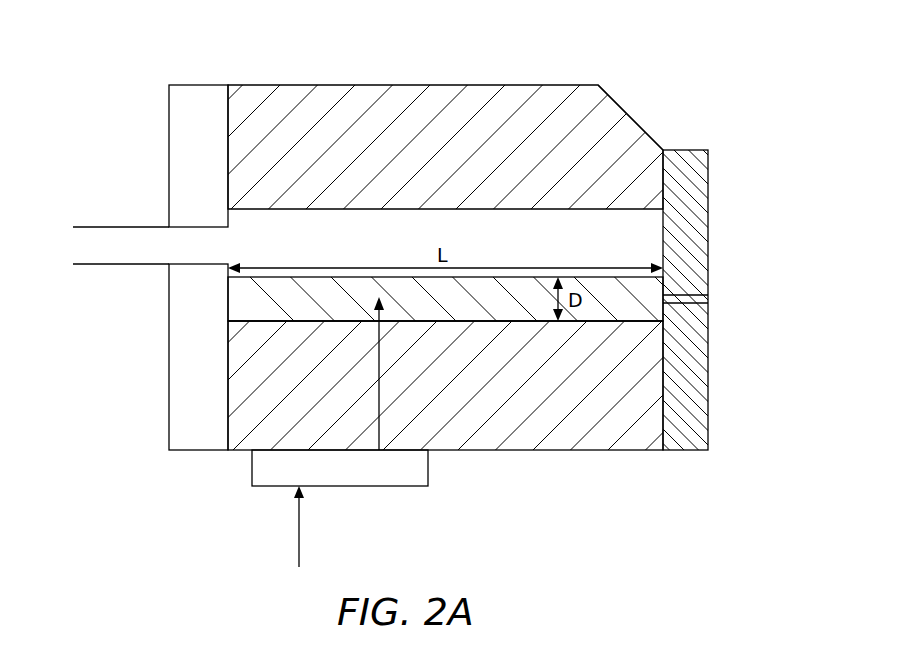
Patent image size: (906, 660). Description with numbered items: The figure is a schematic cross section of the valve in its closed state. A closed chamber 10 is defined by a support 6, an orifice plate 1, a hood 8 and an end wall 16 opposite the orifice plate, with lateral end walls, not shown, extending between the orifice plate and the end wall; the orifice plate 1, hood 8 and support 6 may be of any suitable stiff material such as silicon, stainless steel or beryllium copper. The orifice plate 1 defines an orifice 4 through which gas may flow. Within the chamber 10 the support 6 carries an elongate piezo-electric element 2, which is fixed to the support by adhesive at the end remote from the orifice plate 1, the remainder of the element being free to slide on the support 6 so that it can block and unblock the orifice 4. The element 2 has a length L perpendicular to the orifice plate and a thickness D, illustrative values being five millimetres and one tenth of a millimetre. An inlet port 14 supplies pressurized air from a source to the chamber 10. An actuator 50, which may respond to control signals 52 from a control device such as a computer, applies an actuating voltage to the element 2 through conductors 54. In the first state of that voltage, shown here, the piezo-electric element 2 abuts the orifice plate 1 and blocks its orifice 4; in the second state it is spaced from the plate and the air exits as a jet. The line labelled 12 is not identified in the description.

The orifice plate 1 is at (708, 393).
The piezo-electric element 2 is at (503, 308).
The orifice 4 is at (708, 298).
The support 6 is at (592, 440).
The hood 8 is at (610, 112).
The closed chamber 10 is at (333, 230).
The interface between layer and block 12 is at (258, 323).
The inlet port 14 is at (117, 226).
The end wall 16 is at (177, 120).
The actuator 50 is at (252, 468).
The control signals 52 is at (299, 538).
The conductors 54 is at (379, 430).